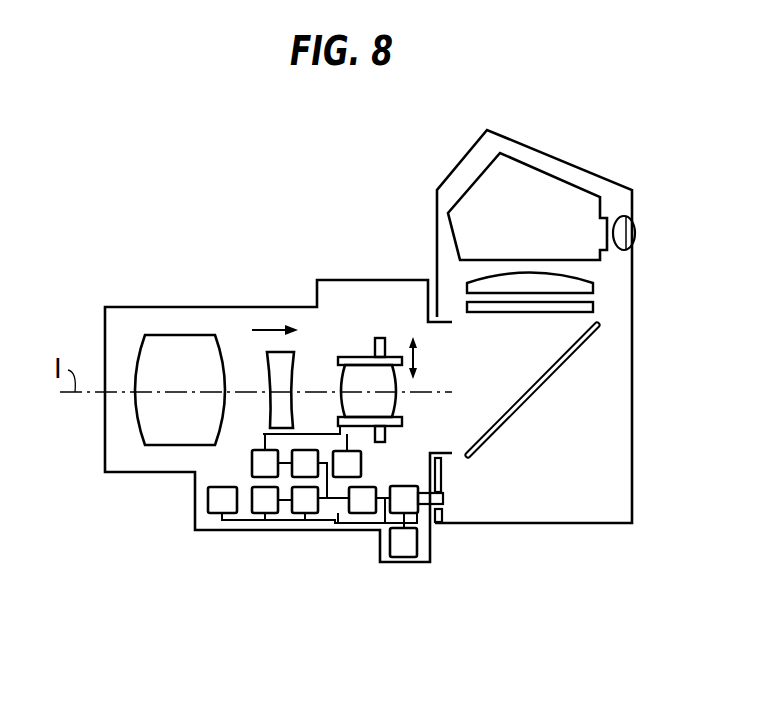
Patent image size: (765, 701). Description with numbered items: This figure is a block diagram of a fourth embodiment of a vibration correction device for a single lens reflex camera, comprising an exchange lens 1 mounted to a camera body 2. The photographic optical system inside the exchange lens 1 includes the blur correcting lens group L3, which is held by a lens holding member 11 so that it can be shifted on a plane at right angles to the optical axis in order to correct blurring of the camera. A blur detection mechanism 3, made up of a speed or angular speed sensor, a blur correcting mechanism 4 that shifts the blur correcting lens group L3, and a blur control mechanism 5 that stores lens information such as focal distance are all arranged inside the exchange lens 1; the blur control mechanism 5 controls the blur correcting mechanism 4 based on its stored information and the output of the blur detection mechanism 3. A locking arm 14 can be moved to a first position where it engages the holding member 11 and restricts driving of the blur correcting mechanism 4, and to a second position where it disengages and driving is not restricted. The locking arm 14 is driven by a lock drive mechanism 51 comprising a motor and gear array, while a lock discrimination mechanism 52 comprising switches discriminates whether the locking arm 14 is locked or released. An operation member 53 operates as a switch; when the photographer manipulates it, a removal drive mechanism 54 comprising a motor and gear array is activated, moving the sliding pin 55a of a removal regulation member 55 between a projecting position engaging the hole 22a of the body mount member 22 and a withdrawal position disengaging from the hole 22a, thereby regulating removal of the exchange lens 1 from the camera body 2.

The exchange lens 1 is at (239, 191).
The camera body 2 is at (550, 141).
The blur detection mechanism 3 is at (220, 500).
The blur correcting mechanism 4 is at (347, 466).
The blur control mechanism 5 is at (302, 497).
The lens holding member 11 is at (373, 343).
The locking arm 14 is at (263, 502).
The body mount member 22 is at (446, 470).
The hole 22a is at (445, 500).
The lock drive mechanism 51 is at (305, 462).
The lock discrimination mechanism 52 is at (259, 468).
The operation member 53 is at (404, 498).
The removal drive mechanism 54 is at (362, 502).
The removal regulation member 55 is at (414, 534).
The sliding pin 55a is at (444, 515).
The blur correcting lens group L3 is at (353, 375).